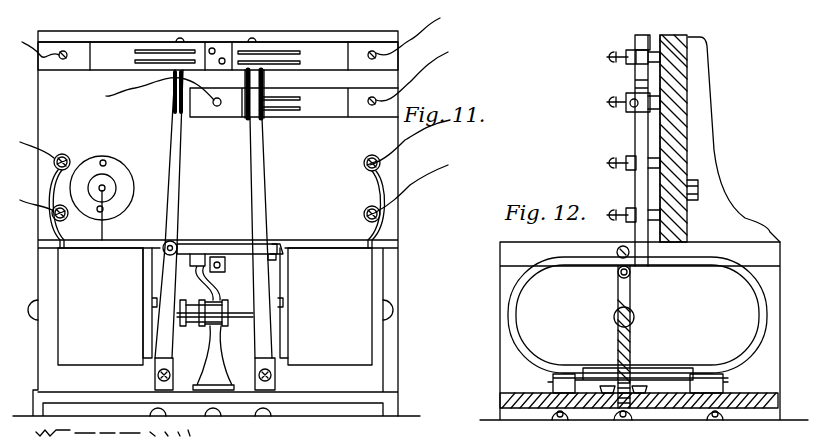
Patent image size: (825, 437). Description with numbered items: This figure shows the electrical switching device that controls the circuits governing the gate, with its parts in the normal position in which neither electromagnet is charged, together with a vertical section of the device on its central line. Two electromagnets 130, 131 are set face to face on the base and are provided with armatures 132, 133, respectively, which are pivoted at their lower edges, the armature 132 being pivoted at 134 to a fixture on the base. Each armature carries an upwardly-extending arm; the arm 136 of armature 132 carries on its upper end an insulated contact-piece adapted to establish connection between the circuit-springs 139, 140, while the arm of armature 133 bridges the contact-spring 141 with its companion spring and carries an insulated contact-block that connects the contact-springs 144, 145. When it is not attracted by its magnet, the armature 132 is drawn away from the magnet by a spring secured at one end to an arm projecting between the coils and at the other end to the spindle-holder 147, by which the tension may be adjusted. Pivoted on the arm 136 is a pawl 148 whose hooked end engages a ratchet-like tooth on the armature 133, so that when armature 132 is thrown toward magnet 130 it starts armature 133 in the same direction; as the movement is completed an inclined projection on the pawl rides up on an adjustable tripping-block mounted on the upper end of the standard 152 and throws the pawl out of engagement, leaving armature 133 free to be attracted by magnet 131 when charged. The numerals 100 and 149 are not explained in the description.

In FIG. 11, the cross bar 100 is at (231, 250).
In FIG. 11, the electromagnet 130 is at (100, 306).
In FIG. 12, the electromagnet 130 is at (513, 325).
In FIG. 11, the electromagnet 131 is at (325, 306).
In FIG. 11, the armature 132 is at (165, 337).
In FIG. 12, the armature 132 is at (637, 336).
In FIG. 11, the armature 133 is at (263, 282).
In FIG. 12, the pivot 134 is at (553, 379).
In FIG. 11, the arm 136 is at (176, 183).
In FIG. 12, the arm 136 is at (638, 130).
In FIG. 11, the circuit-spring 139 is at (110, 69).
In FIG. 11, the circuit-spring 140 is at (192, 45).
In FIG. 11, the contact-spring 141 is at (243, 118).
In FIG. 11, the contact-spring 144 is at (234, 45).
In FIG. 11, the contact-spring 145 is at (277, 50).
In FIG. 11, the spindle-holder 147 is at (100, 183).
In FIG. 11, the pawl 148 is at (190, 247).
In FIG. 11, the clip 149 is at (278, 245).
In FIG. 11, the standard 152 is at (214, 358).